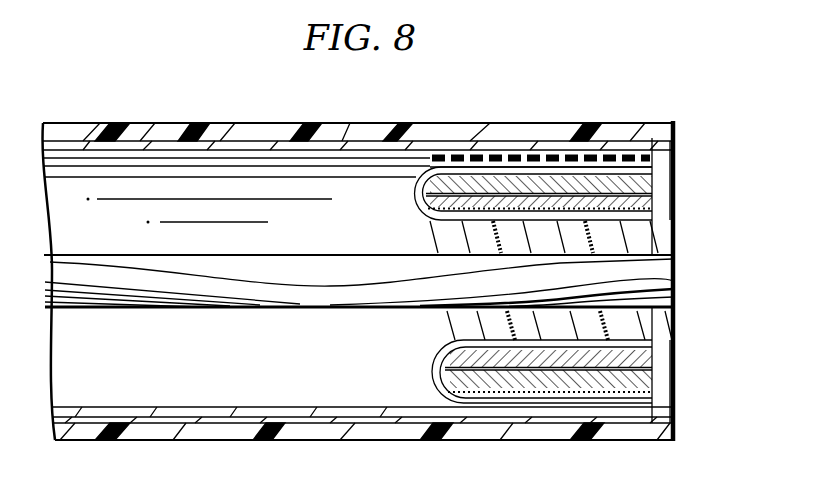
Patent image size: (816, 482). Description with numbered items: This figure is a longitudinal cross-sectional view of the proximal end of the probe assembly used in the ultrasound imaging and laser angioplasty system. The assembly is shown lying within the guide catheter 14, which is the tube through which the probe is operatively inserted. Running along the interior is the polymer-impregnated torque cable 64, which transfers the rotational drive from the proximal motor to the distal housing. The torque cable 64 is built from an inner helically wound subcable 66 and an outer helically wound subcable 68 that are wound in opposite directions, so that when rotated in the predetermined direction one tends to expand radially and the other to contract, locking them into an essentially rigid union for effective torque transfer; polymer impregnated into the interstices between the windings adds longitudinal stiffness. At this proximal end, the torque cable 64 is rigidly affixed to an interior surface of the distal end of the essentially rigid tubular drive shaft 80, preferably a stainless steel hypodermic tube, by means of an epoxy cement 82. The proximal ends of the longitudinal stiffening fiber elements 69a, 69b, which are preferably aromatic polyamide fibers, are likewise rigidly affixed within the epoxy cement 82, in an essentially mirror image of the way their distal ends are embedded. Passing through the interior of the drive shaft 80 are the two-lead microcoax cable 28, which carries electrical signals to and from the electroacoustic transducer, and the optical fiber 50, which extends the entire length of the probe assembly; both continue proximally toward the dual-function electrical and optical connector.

The guide catheter 14 is at (136, 123).
The microcoax cable 28 is at (291, 263).
The optical fiber 50 is at (352, 303).
The torque cable 64 is at (657, 171).
The inner helically wound subcable 66 is at (655, 330).
The outer helically wound subcable 68 is at (677, 180).
The elongate fiber element 69a is at (415, 187).
The elongate fiber element 69b is at (432, 375).
The tubular drive shaft 80 is at (378, 147).
The epoxy cement 82 is at (481, 151).